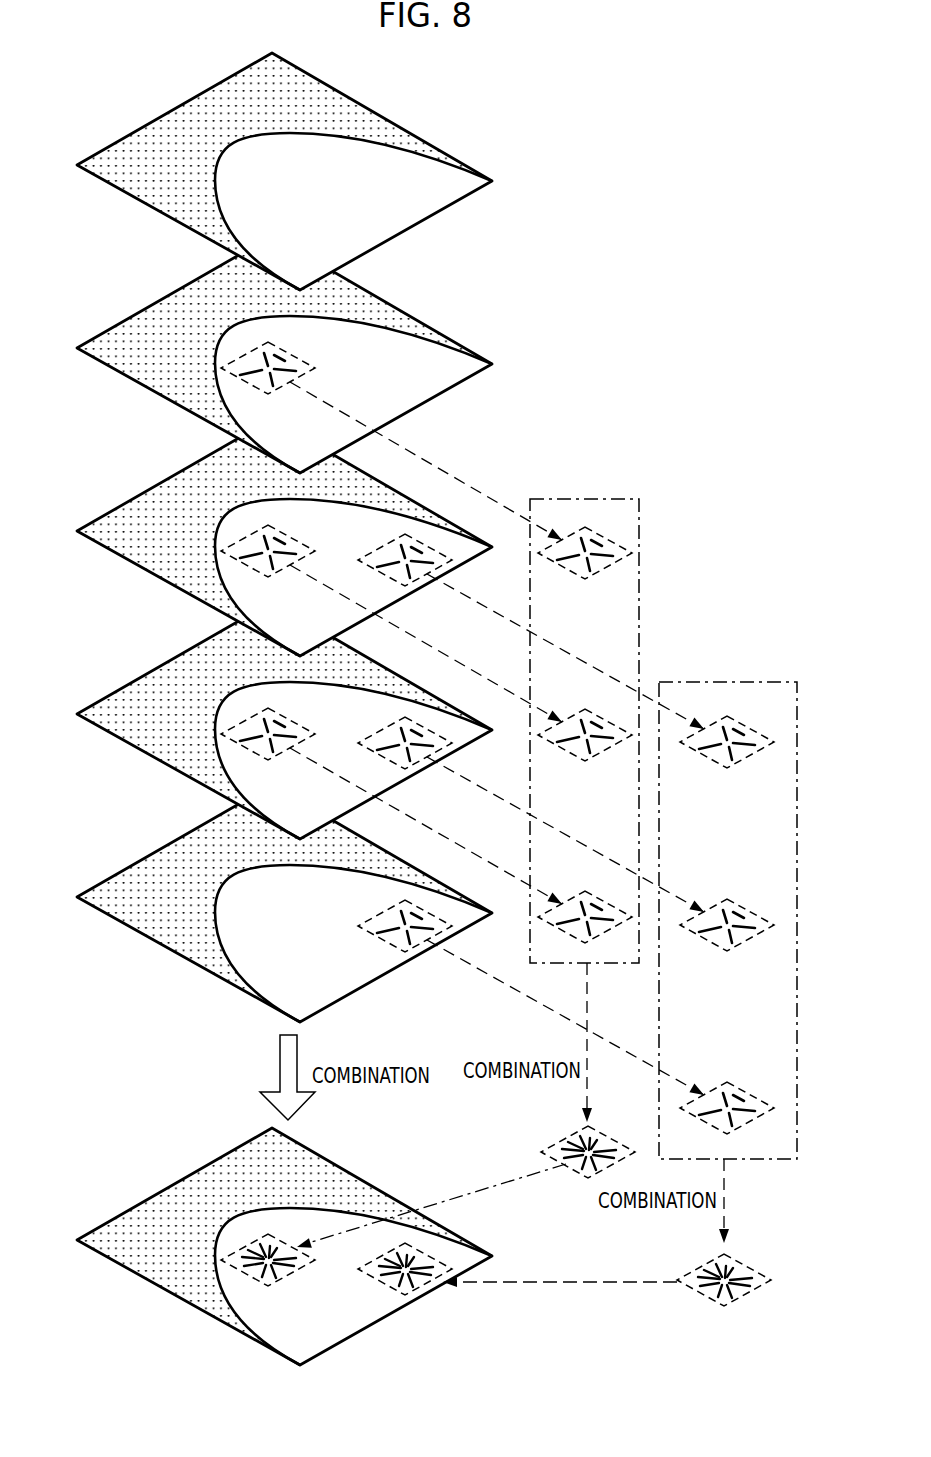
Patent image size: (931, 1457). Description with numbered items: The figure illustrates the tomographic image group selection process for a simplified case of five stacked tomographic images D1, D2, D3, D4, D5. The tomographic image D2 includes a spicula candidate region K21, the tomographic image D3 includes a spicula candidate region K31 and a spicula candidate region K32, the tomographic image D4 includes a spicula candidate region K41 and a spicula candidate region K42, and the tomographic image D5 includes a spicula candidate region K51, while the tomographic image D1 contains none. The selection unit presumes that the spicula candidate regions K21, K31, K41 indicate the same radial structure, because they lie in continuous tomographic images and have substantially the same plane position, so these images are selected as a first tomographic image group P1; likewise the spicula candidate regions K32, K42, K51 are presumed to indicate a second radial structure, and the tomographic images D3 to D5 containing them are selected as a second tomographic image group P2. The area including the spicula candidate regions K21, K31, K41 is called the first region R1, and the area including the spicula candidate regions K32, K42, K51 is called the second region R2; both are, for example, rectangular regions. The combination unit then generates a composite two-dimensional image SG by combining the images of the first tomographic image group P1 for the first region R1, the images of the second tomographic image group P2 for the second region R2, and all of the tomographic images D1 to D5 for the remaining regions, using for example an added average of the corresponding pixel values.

The tomographic image D1 is at (113, 147).
The tomographic image D2 is at (113, 330).
The tomographic image D3 is at (113, 513).
The tomographic image D4 is at (113, 696).
The tomographic image D5 is at (113, 879).
The composite two-dimensional image SG is at (113, 1222).
The first region R1 is at (230, 383).
The second region R2 is at (431, 581).
The spicula candidate region K21 is at (305, 352).
The spicula candidate region K31 is at (295, 537).
The spicula candidate region K32 is at (443, 547).
The spicula candidate region K41 is at (296, 722).
The spicula candidate region K42 is at (441, 726).
The spicula candidate region K51 is at (428, 914).
The first tomographic image group P1 is at (617, 498).
The second tomographic image group P2 is at (760, 682).